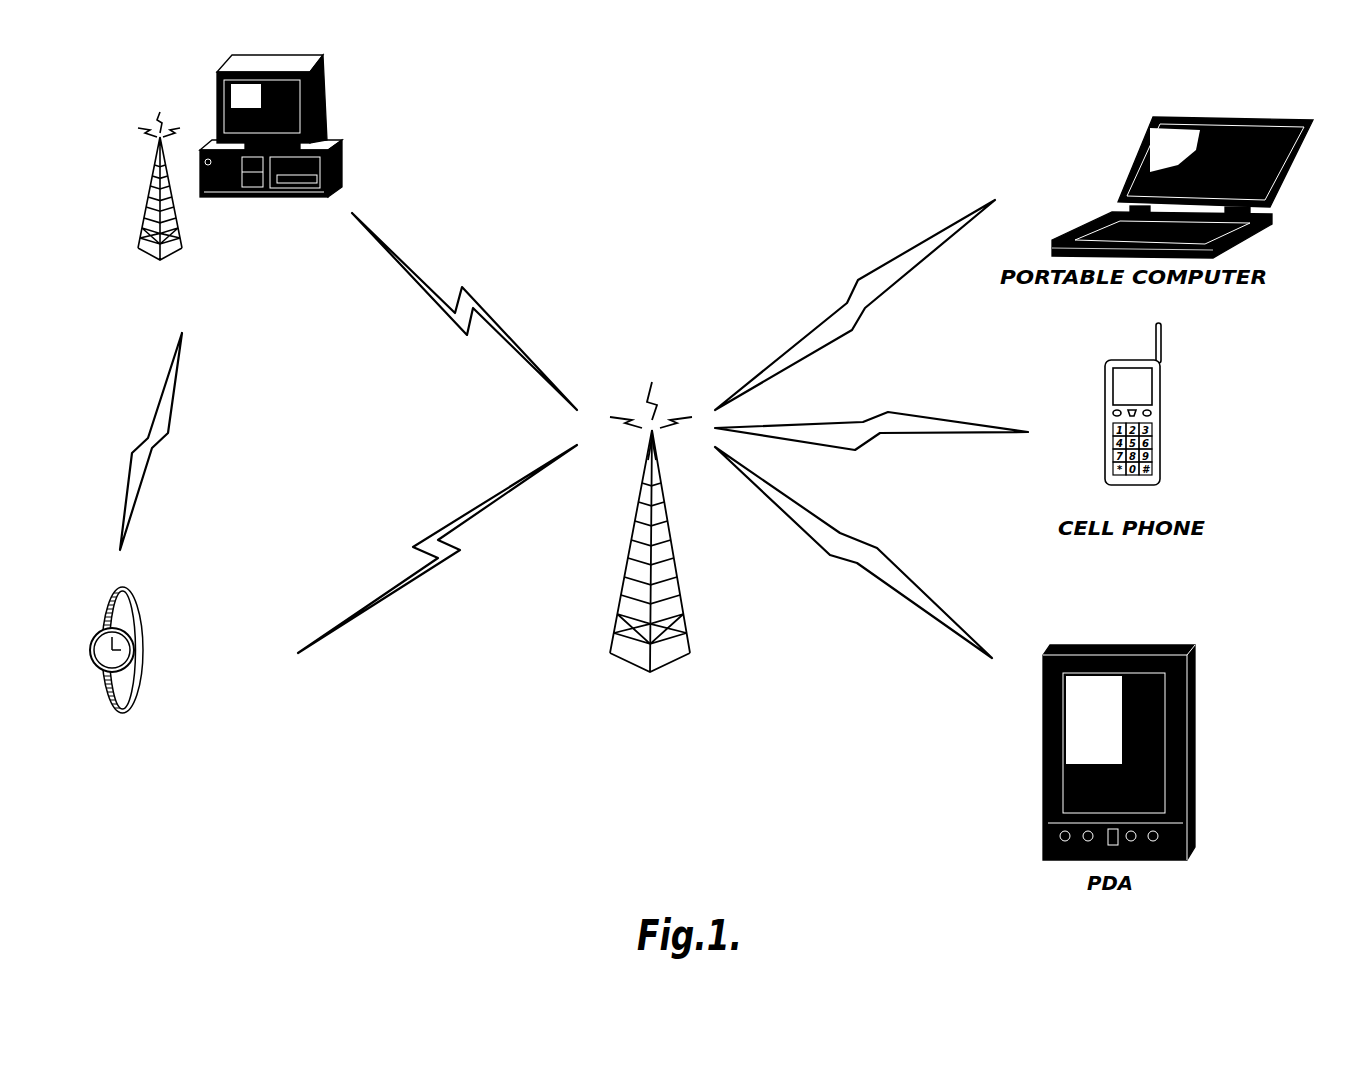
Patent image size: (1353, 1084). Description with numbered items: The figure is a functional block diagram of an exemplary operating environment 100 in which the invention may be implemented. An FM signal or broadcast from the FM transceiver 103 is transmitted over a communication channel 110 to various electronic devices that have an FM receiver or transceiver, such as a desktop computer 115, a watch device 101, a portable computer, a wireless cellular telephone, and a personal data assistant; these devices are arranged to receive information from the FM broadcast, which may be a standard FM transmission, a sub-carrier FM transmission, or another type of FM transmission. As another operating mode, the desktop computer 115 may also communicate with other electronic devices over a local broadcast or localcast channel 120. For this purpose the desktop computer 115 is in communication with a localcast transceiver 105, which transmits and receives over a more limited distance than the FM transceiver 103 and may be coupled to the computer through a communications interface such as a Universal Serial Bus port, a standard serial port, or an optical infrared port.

The operating environment 100 is at (687, 152).
The watch device 101 is at (157, 653).
The FM transceiver 103 is at (665, 722).
The localcast transceiver 105 is at (136, 199).
The communication channel 110 is at (434, 509).
The desktop computer 115 is at (344, 130).
The localcast channel 120 is at (120, 410).